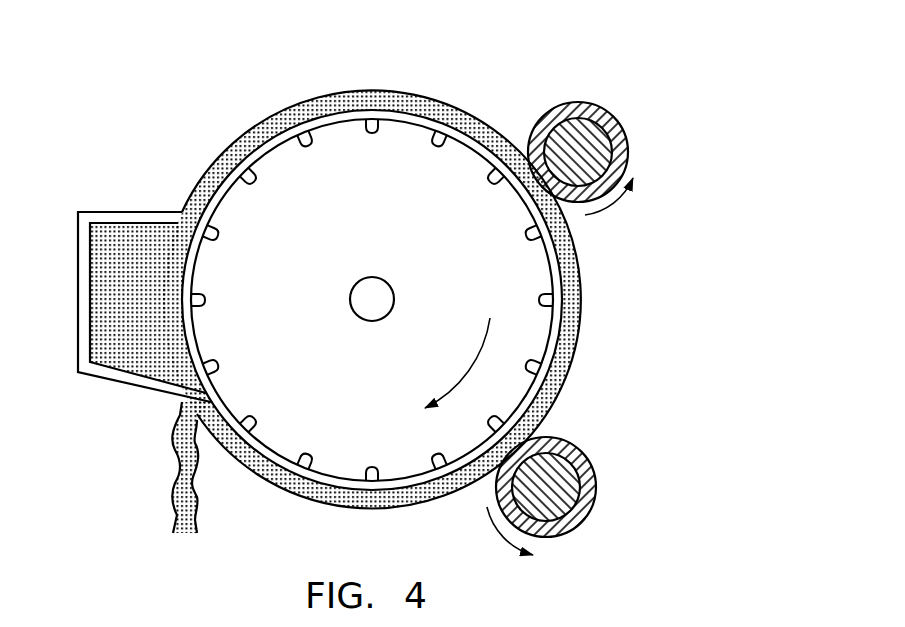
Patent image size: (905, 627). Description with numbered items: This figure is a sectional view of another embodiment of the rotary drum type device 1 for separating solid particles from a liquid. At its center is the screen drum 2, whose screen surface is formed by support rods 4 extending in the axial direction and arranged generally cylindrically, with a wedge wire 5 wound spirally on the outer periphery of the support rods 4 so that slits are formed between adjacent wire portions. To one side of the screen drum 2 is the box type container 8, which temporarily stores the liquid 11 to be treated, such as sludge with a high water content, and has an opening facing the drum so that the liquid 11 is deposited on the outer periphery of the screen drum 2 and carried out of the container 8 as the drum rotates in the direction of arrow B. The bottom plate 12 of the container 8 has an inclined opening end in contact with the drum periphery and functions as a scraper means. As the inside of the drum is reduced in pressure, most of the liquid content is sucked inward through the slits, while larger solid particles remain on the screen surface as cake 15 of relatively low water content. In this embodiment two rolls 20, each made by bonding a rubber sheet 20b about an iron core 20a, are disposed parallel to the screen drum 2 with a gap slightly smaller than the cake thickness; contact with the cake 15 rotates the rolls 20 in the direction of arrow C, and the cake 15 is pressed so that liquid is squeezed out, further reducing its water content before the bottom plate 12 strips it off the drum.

The rotary drum type device 1 is at (480, 97).
The screen drum 2 is at (413, 257).
The support rods 4 is at (253, 167).
The wedge wire 5 is at (333, 117).
The box type container 8 is at (97, 218).
The liquid to be treated 11 is at (142, 280).
The bottom plate 12 is at (158, 392).
The cake 15 is at (572, 354).
The rolls 20 is at (605, 288).
The iron core 20a is at (597, 142).
The rubber sheet 20b is at (607, 130).